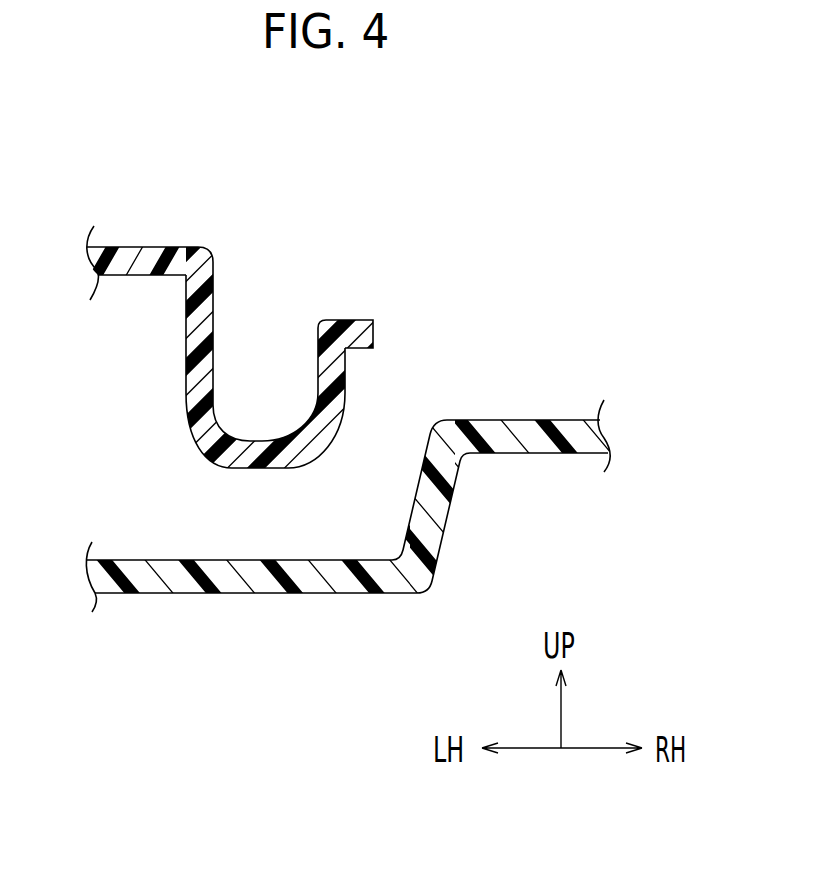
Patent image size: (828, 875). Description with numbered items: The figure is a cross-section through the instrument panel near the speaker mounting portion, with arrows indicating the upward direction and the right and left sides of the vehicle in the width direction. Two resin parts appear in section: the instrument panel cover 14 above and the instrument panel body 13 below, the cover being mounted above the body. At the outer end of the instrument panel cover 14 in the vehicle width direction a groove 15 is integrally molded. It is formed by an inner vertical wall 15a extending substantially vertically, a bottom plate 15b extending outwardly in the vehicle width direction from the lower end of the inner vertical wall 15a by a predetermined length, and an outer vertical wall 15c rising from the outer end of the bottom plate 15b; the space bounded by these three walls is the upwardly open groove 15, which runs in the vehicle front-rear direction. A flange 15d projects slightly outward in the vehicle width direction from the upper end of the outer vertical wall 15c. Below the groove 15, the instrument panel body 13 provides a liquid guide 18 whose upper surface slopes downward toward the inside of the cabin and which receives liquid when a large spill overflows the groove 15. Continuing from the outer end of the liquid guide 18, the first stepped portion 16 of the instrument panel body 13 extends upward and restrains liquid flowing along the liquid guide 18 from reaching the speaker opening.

The instrument panel body 13 is at (531, 401).
The instrument panel cover 14 is at (150, 231).
The groove 15 is at (223, 359).
The inner vertical wall 15a is at (186, 340).
The bottom plate 15b is at (265, 470).
The outer vertical wall 15c is at (348, 373).
The flange 15d is at (355, 319).
The first stepped portion 16 is at (418, 486).
The liquid guide 18 is at (295, 560).